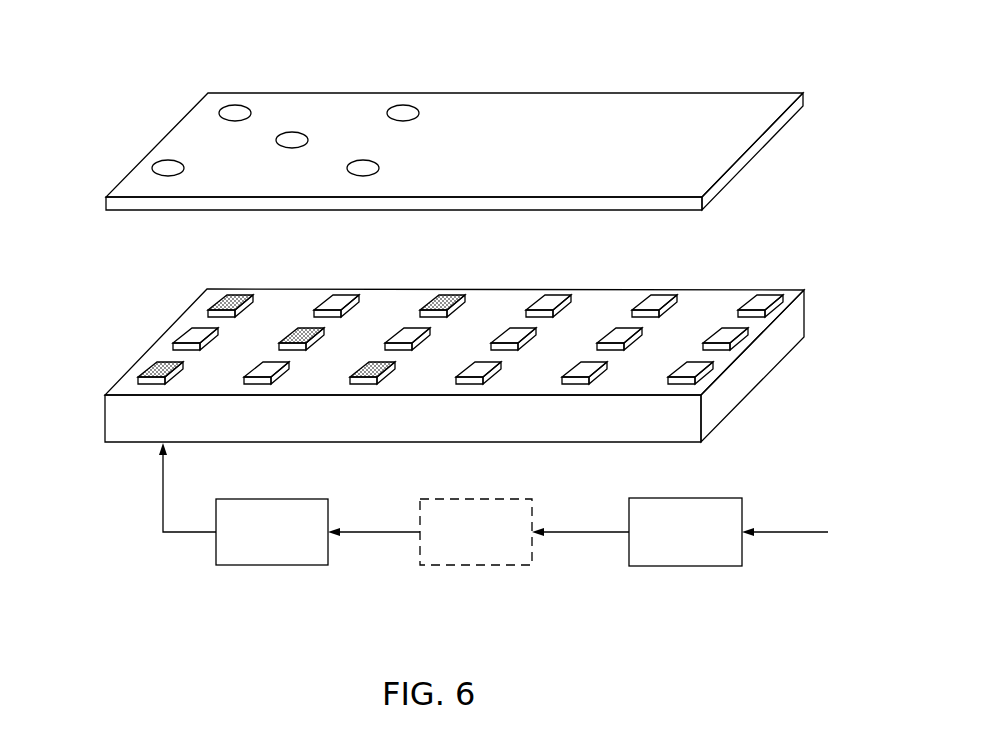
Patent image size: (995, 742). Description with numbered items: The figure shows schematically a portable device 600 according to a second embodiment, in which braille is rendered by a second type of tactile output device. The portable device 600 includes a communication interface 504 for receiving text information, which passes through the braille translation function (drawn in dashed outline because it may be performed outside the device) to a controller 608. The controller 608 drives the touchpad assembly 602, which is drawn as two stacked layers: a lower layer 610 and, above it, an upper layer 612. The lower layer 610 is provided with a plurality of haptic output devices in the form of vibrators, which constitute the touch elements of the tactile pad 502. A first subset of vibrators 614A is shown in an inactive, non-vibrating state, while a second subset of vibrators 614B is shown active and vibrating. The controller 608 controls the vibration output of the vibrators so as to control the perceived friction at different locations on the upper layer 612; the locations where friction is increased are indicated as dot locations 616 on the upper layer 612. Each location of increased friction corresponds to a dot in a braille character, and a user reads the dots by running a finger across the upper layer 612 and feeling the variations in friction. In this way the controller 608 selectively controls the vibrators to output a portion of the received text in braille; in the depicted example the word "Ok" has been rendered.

The portable device 600 is at (135, 96).
The display panel assembly 602 is at (808, 130).
The upper layer 612 is at (737, 120).
The dot locations 616 is at (243, 110).
The lower layer 610 is at (723, 305).
The first subset of vibrators 614A is at (190, 335).
The second subset of vibrators 614B is at (147, 368).
The controller 608 is at (250, 567).
The communication interface 504 is at (460, 567).
The tactile pad 502 is at (700, 567).